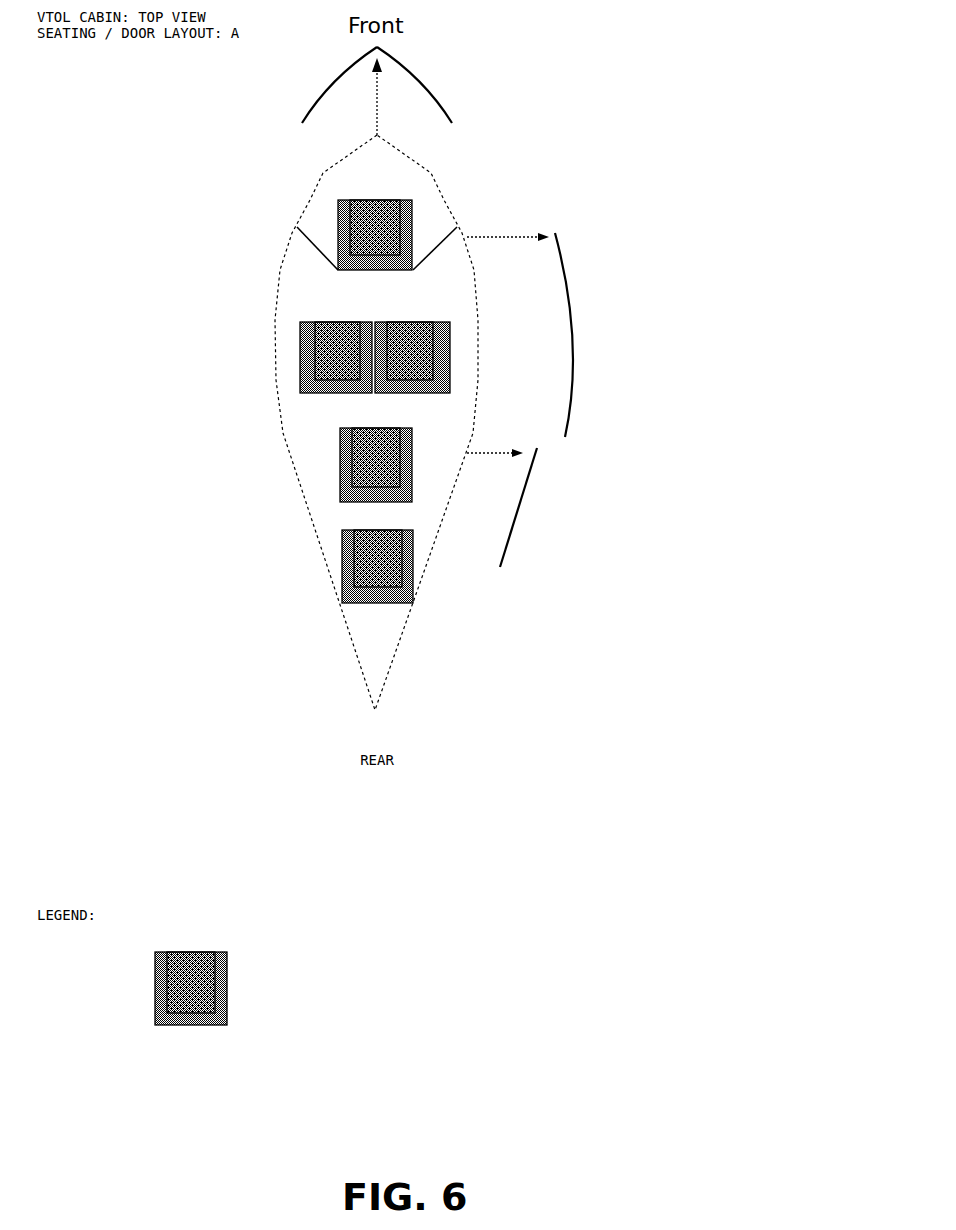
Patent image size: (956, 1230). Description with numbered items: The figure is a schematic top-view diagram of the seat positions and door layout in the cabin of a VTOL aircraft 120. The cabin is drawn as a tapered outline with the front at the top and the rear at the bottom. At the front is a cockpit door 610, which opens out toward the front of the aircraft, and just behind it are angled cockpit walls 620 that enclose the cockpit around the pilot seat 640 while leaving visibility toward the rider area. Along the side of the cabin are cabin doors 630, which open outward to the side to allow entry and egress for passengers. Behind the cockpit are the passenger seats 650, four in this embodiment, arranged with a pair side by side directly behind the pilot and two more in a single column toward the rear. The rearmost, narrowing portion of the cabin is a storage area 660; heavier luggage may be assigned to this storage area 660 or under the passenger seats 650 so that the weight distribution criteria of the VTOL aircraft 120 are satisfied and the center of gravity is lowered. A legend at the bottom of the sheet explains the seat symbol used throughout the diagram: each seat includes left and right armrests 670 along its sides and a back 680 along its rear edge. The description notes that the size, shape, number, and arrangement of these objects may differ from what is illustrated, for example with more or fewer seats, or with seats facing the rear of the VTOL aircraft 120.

The VTOL aircraft 120 is at (362, 316).
The cockpit door 610 is at (428, 92).
The cockpit walls 620 is at (566, 225).
The cabin doors 630 is at (571, 308).
The pilot seat 640 is at (373, 210).
The passenger seats 650 is at (325, 346).
The storage area 660 is at (375, 648).
The armrests 670 is at (245, 979).
The back 680 is at (226, 1041).